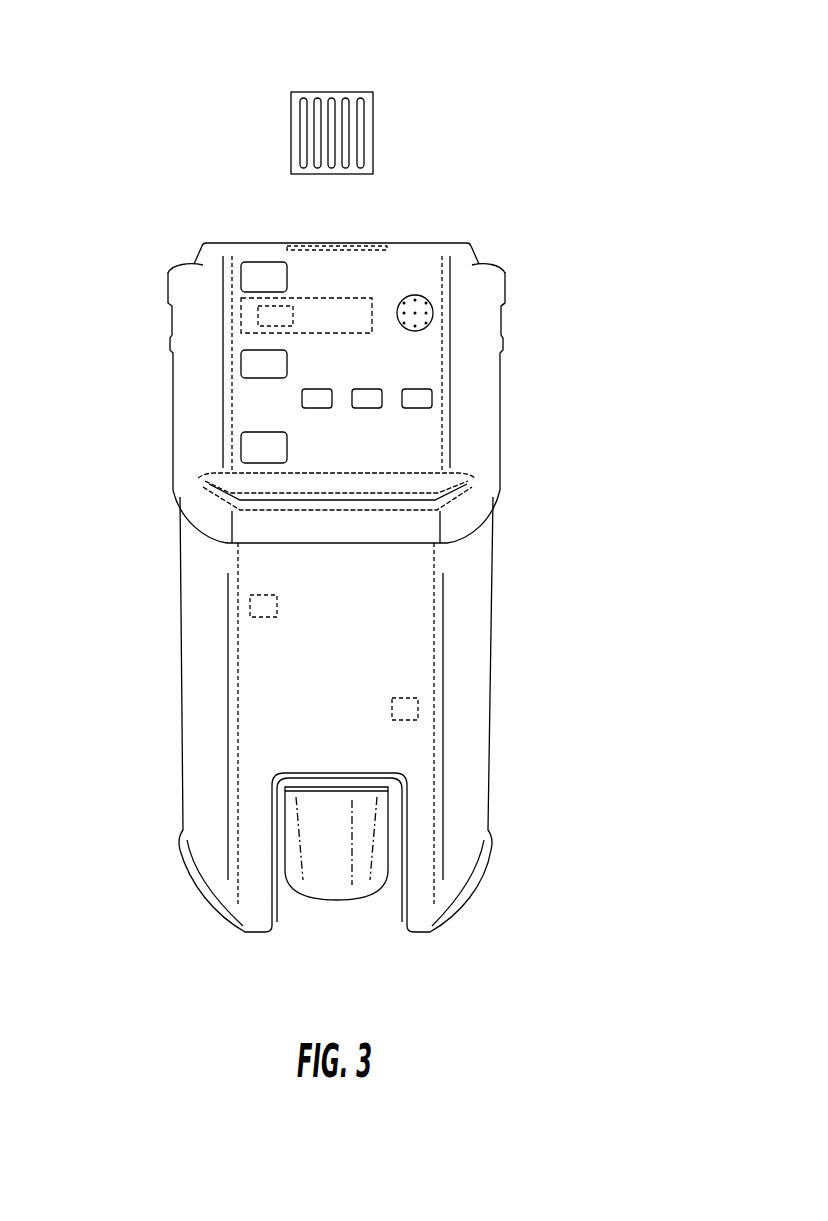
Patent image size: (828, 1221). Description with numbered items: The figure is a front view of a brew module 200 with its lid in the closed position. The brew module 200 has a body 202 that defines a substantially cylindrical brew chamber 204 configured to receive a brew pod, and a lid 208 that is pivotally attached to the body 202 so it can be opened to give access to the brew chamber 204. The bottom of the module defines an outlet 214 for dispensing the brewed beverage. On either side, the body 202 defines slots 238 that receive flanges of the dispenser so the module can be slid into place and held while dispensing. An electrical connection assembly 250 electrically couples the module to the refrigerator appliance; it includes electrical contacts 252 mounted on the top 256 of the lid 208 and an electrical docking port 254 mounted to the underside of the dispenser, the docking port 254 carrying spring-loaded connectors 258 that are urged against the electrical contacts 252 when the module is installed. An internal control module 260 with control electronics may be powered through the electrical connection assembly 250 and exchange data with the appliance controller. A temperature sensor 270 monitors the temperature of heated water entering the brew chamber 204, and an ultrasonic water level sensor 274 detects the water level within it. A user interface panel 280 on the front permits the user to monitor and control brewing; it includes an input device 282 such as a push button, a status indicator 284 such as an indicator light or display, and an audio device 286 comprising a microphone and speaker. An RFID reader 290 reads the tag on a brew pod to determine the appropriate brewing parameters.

The brew module 200 is at (372, 518).
The body 202 is at (339, 753).
The brew chamber 204 is at (268, 692).
The lid 208 is at (339, 366).
The outlet 214 is at (313, 910).
The slots 238 is at (508, 334).
The electrical connection assembly 250 is at (334, 137).
The electrical contacts 252 is at (312, 242).
The electrical docking port 254 is at (305, 100).
The top 256 is at (203, 240).
The spring-loaded connectors 258 is at (303, 133).
The internal control module 260 is at (244, 318).
The temperature sensor 270 is at (418, 708).
The ultrasonic water level sensor 274 is at (250, 607).
The user interface panel 280 is at (334, 329).
The input device 282 is at (242, 278).
The status indicator 284 is at (433, 398).
The audio device 286 is at (422, 312).
The RFID reader 290 is at (259, 322).